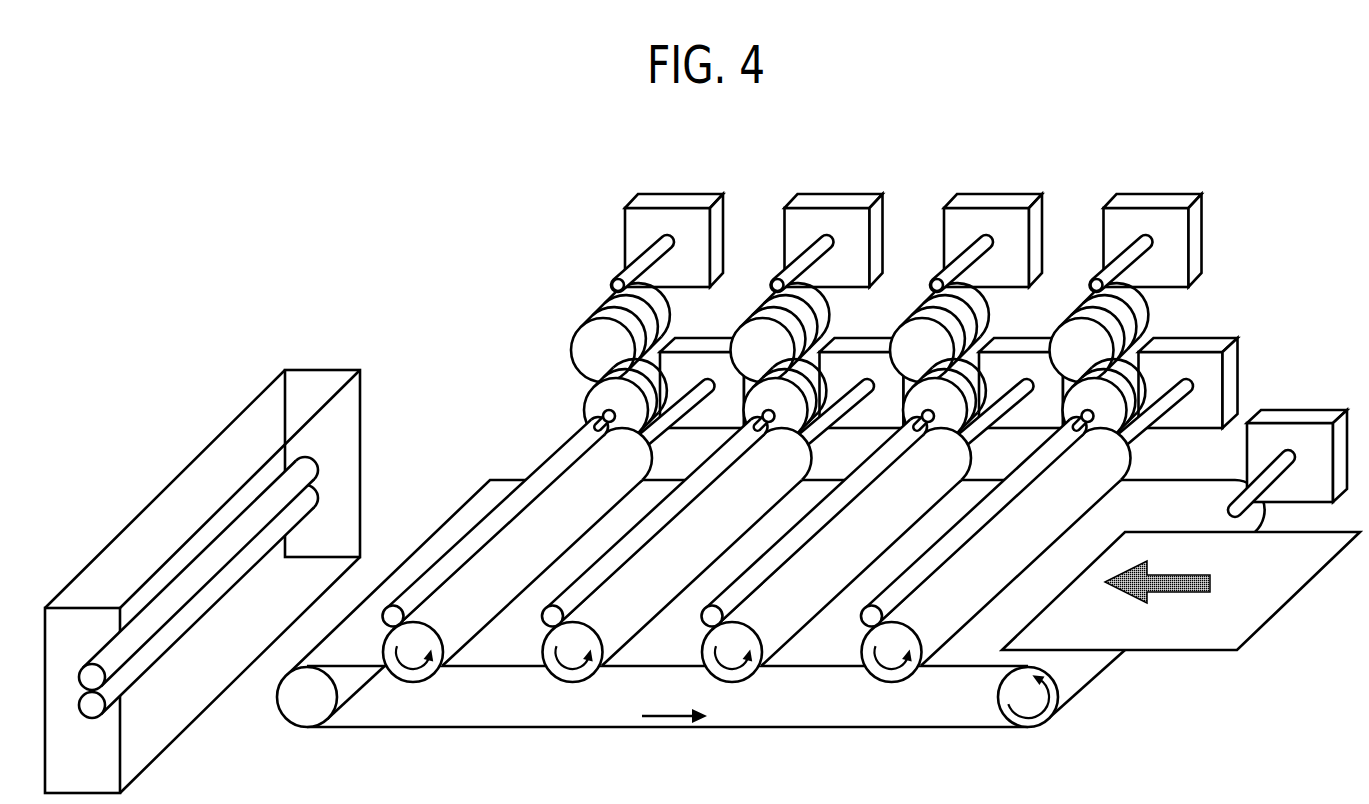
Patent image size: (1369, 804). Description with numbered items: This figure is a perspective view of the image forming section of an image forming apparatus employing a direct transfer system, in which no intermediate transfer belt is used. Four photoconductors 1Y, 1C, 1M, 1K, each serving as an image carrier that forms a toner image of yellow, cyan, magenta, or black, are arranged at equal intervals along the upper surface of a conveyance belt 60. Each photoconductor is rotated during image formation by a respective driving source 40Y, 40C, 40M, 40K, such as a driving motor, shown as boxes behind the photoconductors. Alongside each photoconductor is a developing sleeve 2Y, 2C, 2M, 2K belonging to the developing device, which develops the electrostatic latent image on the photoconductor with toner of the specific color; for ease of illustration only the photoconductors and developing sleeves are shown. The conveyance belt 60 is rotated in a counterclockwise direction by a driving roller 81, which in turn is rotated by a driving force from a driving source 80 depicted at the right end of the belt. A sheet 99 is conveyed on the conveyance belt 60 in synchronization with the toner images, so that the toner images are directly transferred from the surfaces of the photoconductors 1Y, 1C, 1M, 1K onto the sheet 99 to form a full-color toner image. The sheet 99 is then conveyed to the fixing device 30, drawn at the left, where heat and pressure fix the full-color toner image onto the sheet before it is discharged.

The photoconductor 1Y is at (408, 679).
The photoconductor 1C is at (705, 547).
The photoconductor 1M is at (864, 547).
The photoconductor 1K is at (1024, 547).
The developing sleeve 2Y is at (562, 447).
The developing sleeve 2C is at (562, 447).
The developing sleeve 2M is at (818, 518).
The developing sleeve 2K is at (977, 518).
The driving source 40Y is at (693, 342).
The driving source 40C is at (869, 361).
The driving source 40M is at (1028, 361).
The driving source 40K is at (1188, 361).
The fixing device 30 is at (340, 352).
The conveyance belt 60 is at (524, 728).
The driving roller 81 is at (1005, 707).
The driving source 80 is at (1295, 415).
The sheet 99 is at (1178, 641).